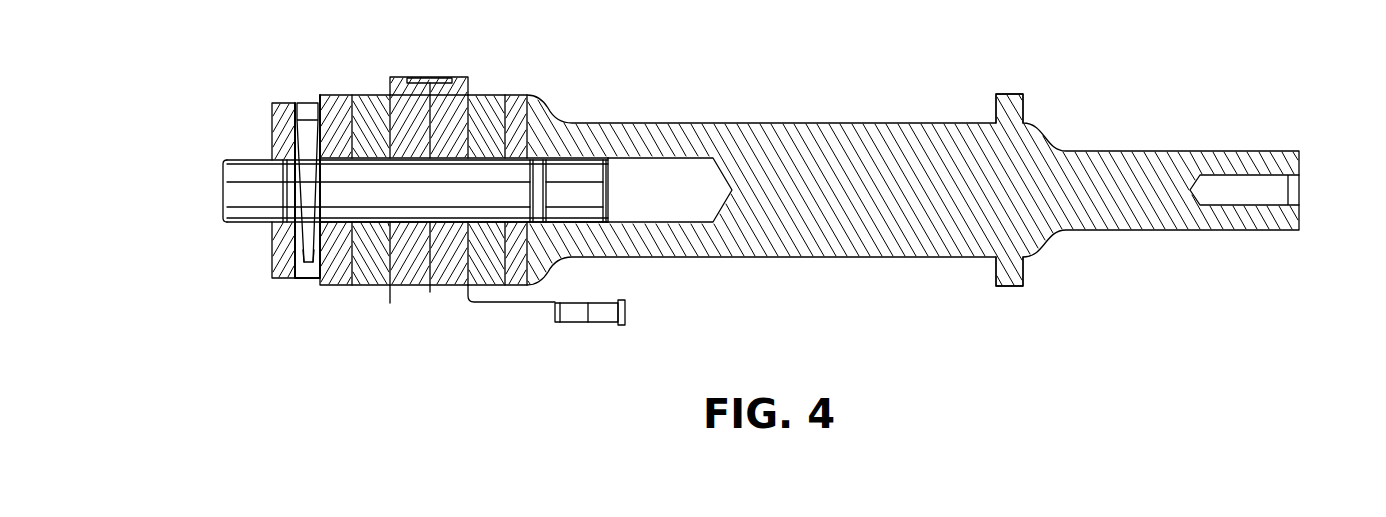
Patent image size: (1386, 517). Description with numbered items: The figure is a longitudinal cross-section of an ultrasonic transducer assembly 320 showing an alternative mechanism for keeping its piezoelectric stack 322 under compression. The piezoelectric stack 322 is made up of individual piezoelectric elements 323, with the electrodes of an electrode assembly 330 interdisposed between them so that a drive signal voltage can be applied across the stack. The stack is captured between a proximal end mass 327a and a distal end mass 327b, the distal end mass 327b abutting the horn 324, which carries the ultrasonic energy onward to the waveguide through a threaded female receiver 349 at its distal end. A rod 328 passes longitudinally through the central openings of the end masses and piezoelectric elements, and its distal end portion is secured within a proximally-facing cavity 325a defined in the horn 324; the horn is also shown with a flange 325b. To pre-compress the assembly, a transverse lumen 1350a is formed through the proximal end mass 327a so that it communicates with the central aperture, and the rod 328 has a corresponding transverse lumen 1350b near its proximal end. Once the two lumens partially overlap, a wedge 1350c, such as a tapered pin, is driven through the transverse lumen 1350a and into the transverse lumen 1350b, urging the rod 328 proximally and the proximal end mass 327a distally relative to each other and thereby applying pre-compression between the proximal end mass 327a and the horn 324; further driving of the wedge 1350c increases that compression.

The ultrasonic transducer assembly 320 is at (823, 55).
The piezoelectric stack 322 is at (500, 313).
The piezoelectric element 323 is at (488, 100).
The horn 324 is at (853, 245).
The proximally-facing cavity 325a is at (678, 173).
The flange 325b is at (995, 110).
The proximal end mass 327a is at (284, 108).
The distal end mass 327b is at (528, 108).
The rod 328 is at (347, 205).
The electrode assembly 330 is at (602, 322).
The threaded female receiver 349 is at (1275, 192).
The transverse lumen 1350a is at (311, 108).
The transverse lumen 1350b is at (296, 210).
The wedge 1350c is at (307, 263).